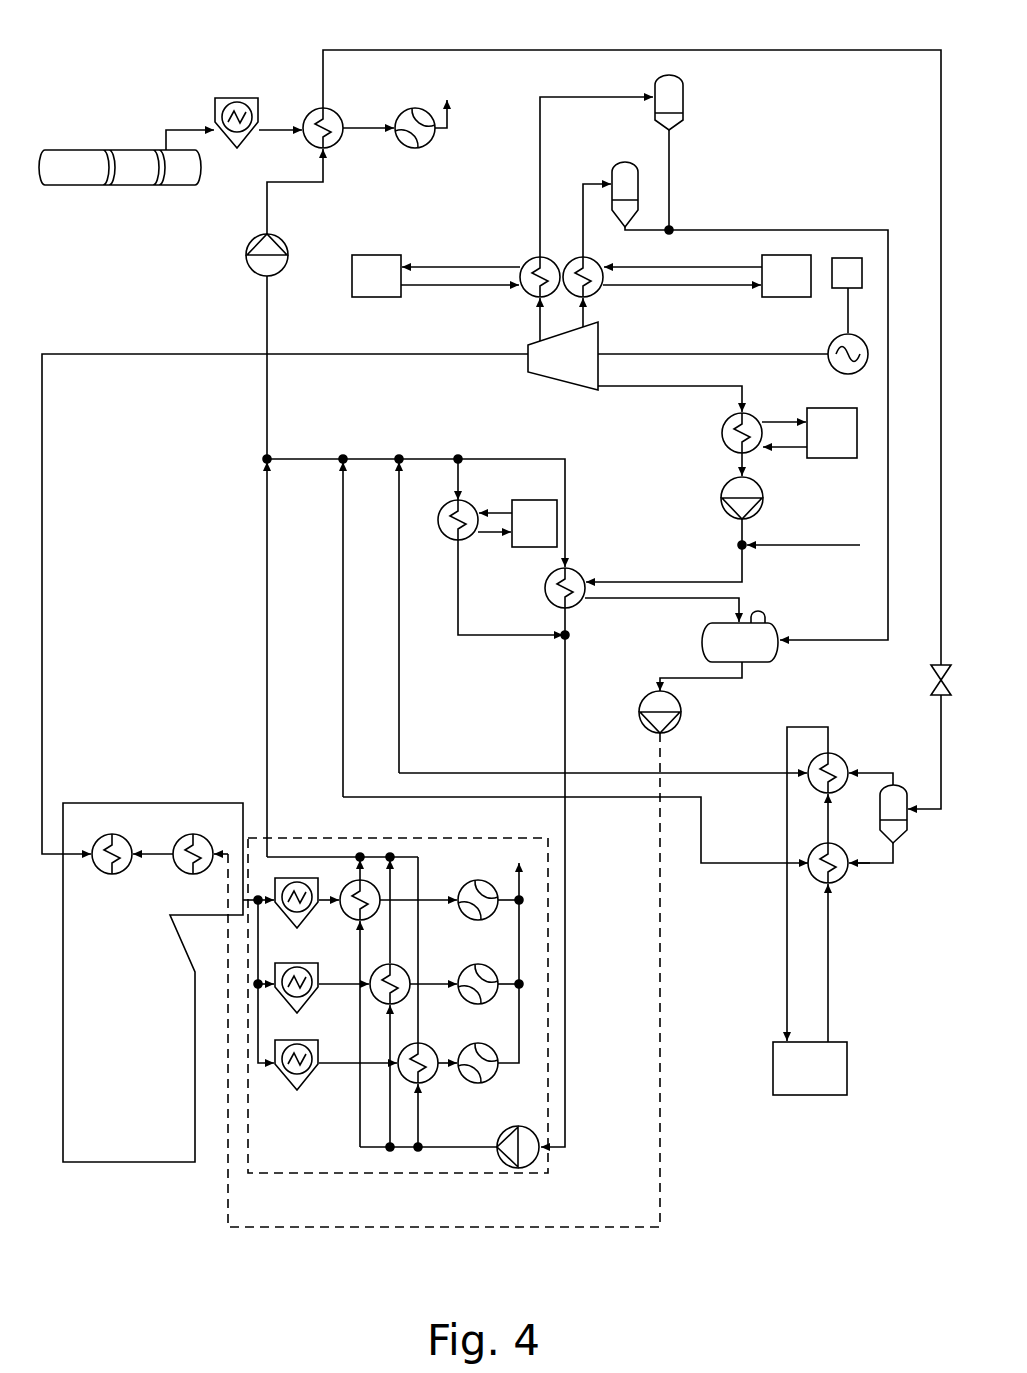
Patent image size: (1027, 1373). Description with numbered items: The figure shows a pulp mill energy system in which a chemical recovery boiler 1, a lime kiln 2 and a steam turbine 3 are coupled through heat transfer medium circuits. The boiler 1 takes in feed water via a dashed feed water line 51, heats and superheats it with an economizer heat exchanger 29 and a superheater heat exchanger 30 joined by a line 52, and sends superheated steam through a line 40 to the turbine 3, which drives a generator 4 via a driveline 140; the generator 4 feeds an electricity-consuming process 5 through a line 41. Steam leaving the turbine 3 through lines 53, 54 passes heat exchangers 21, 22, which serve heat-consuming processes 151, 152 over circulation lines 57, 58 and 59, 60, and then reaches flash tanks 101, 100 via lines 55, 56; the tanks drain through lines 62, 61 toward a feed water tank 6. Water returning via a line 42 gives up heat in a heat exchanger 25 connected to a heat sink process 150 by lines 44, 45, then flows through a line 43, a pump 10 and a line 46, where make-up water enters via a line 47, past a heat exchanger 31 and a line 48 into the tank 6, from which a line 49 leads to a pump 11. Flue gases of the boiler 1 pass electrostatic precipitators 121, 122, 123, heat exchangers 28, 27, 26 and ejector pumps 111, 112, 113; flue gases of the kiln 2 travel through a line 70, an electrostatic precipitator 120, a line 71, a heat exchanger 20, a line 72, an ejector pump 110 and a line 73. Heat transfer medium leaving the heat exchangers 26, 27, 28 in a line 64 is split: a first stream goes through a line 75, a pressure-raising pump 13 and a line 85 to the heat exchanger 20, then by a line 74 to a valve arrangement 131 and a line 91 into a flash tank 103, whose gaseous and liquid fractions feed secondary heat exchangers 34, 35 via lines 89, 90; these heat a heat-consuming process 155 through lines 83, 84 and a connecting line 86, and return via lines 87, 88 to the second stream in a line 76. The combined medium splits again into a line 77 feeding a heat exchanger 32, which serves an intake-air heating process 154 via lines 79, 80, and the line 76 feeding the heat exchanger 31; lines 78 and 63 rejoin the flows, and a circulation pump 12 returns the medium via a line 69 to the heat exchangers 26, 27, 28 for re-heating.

The chemical recovery boiler 1 is at (120, 1042).
The lime kiln 2 is at (68, 180).
The steam turbine 3 is at (560, 368).
The generator 4 is at (856, 336).
The electricity-consuming process 5 is at (841, 284).
The feed water tank 6 is at (731, 652).
The pump 10 is at (742, 498).
The pump 11 is at (660, 712).
The pump 12 is at (535, 1162).
The pump 13 is at (255, 267).
The heat exchanger 20 is at (318, 108).
The heat exchanger 21 is at (527, 260).
The heat exchanger 22 is at (594, 260).
The heat exchanger 25 is at (722, 433).
The heat exchanger 26 is at (428, 1083).
The heat exchanger 27 is at (395, 1004).
The heat exchanger 28 is at (367, 920).
The heat exchanger 29 is at (180, 870).
The heat exchanger 30 is at (103, 874).
The heat exchanger 31 is at (575, 568).
The heat exchanger 32 is at (445, 538).
The secondary heat exchanger 34 is at (832, 753).
The secondary heat exchanger 35 is at (845, 880).
The line 40 is at (42, 600).
The line 41 is at (848, 310).
The line 42 is at (624, 386).
The line 43 is at (742, 467).
The line 44 is at (785, 422).
The line 45 is at (790, 447).
The line 46 is at (742, 530).
The line 47 is at (848, 545).
The line 48 is at (665, 598).
The line 49 is at (752, 678).
The feed water line 51 is at (228, 1218).
The line 52 is at (165, 854).
The line 53 is at (540, 322).
The line 54 is at (583, 308).
The line 55 is at (540, 170).
The line 56 is at (583, 205).
The line 57 is at (428, 285).
The line 58 is at (435, 267).
The line 59 is at (725, 285).
The line 60 is at (720, 267).
The line 61 is at (812, 230).
The line 62 is at (669, 162).
The line 63 is at (548, 1100).
The line 64 is at (267, 518).
The line 69 is at (420, 1147).
The line 70 is at (168, 130).
The line 71 is at (272, 130).
The line 72 is at (370, 128).
The line 73 is at (450, 110).
The line 74 is at (592, 50).
The line 75 is at (267, 313).
The line 76 is at (308, 459).
The line 77 is at (458, 485).
The line 78 is at (505, 635).
The line 79 is at (495, 513).
The line 80 is at (495, 532).
The line 83 is at (828, 1012).
The line 84 is at (787, 1005).
The line 85 is at (267, 213).
The line 86 is at (828, 815).
The line 87 is at (399, 523).
The line 88 is at (343, 533).
The line 89 is at (882, 773).
The line 90 is at (870, 863).
The line 91 is at (898, 858).
The flash tank 100 is at (617, 165).
The flash tank 101 is at (683, 90).
The flash tank 103 is at (898, 840).
The ejector pump 110 is at (412, 108).
The ejector pump 111 is at (490, 918).
The ejector pump 112 is at (490, 1003).
The ejector pump 113 is at (490, 1083).
The electrostatic precipitator 120 is at (237, 98).
The electrostatic precipitator 121 is at (302, 926).
The electrostatic precipitator 122 is at (302, 1011).
The electrostatic precipitator 123 is at (299, 1091).
The valve arrangement 131 is at (931, 672).
The driveline 140 is at (636, 354).
The heat-consuming process 150 is at (814, 444).
The heat-consuming process 151 is at (358, 288).
The heat-consuming process 152 is at (768, 288).
The heat-consuming process 154 is at (517, 535).
The heat-consuming process 155 is at (792, 1080).